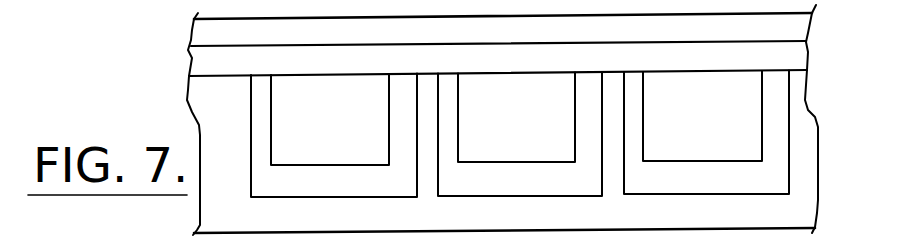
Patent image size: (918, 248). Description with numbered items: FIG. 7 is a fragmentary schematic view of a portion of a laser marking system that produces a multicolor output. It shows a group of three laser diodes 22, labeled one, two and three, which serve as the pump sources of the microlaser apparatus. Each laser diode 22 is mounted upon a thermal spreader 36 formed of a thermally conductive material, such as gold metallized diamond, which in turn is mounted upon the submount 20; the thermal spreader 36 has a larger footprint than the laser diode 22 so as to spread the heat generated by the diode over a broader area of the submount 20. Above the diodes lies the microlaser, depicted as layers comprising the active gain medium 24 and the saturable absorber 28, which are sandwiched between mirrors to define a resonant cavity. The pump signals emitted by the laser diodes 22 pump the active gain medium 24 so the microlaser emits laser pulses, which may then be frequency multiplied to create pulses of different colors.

The submount 20 is at (800, 211).
The laser diode 22 is at (297, 145).
The active gain medium 24 is at (800, 60).
The saturable absorber 28 is at (800, 25).
The thermal spreader 36 is at (387, 192).